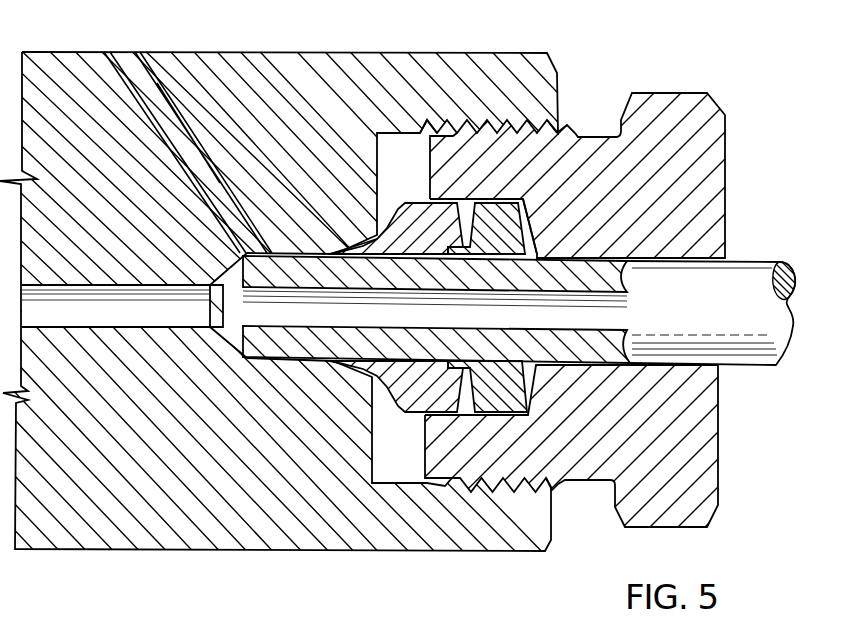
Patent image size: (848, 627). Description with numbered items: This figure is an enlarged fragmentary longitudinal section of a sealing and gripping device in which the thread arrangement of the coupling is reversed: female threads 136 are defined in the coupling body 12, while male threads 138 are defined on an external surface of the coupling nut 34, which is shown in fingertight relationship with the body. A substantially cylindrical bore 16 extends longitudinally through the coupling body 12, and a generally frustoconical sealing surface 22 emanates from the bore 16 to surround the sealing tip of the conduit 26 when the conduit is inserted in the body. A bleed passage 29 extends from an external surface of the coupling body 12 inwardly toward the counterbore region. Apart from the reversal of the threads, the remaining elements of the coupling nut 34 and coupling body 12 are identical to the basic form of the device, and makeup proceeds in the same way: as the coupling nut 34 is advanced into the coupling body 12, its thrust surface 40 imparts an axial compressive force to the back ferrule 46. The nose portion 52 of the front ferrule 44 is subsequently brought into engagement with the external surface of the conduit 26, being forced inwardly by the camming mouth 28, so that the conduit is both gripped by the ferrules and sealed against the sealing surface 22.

The coupling body 12 is at (268, 76).
The bore 16 is at (102, 287).
The sealing surface 22 is at (212, 283).
The conduit 26 is at (405, 275).
The camming mouth 28 is at (353, 253).
The bleed passage 29 is at (198, 148).
The coupling nut 34 is at (663, 118).
The thrust surface 40 is at (528, 230).
The front ferrule 44 is at (427, 233).
The back ferrule 46 is at (506, 235).
The nose portion 52 is at (350, 259).
The female threads 136 is at (420, 132).
The male threads 138 is at (578, 134).